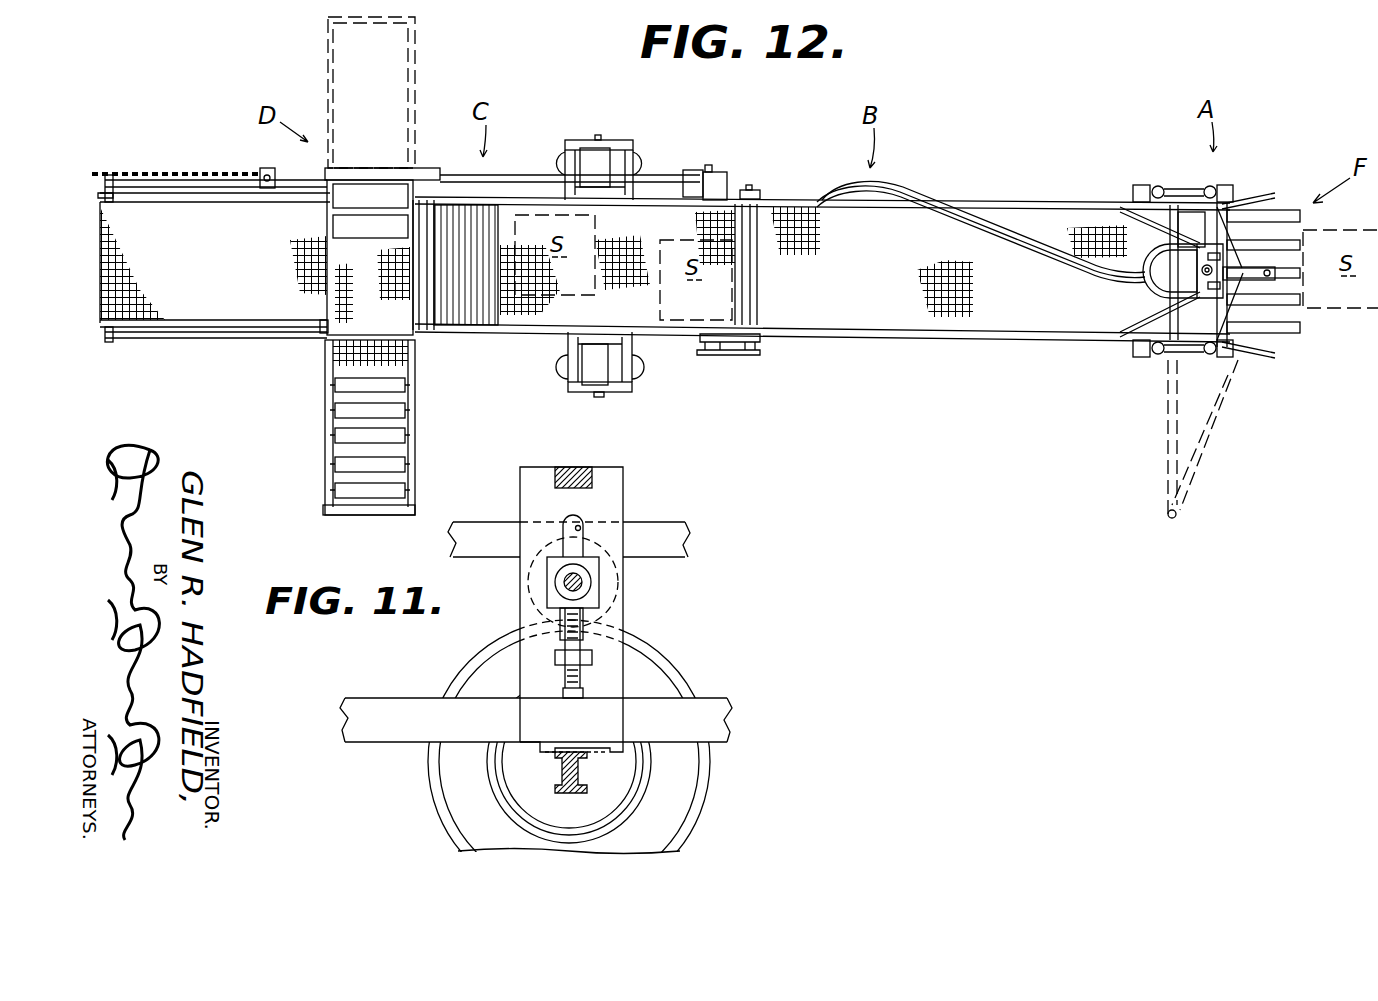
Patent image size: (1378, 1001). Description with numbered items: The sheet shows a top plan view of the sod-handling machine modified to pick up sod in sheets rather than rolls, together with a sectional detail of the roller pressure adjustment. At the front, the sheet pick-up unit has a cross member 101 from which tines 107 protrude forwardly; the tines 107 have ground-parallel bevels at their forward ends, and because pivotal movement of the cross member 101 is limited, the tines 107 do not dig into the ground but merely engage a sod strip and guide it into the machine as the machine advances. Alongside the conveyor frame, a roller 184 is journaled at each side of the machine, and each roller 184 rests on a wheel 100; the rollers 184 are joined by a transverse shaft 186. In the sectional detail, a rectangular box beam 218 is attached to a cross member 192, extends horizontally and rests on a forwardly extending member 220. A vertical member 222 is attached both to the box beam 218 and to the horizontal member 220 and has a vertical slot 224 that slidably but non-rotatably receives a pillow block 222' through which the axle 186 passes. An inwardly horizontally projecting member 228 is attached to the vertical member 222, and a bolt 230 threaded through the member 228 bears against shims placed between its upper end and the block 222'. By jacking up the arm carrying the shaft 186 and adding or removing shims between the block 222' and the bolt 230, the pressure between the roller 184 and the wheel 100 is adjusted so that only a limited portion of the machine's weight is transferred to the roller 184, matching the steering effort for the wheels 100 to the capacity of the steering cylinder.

In FIG. 12, the roller 184 is at (603, 158).
In FIG. 11, the roller 184 is at (530, 577).
In FIG. 12, the transverse shaft 186 is at (599, 397).
In FIG. 11, the transverse shaft 186 is at (560, 590).
In FIG. 12, the tines 107 is at (1274, 211).
In FIG. 12, the cross member 101 is at (1222, 358).
In FIG. 11, the vertical member 222 is at (598, 606).
In FIG. 11, the vertical slot 224 is at (579, 526).
In FIG. 11, the pillow block 222' is at (624, 582).
In FIG. 11, the bolt 230 is at (585, 628).
In FIG. 11, the inwardly horizontally projecting member 228 is at (557, 660).
In FIG. 11, the rectangular box beam 218 is at (688, 729).
In FIG. 11, the forwardly extending member 220 is at (553, 754).
In FIG. 11, the cross member 192 is at (570, 790).
In FIG. 11, the wheel 100 is at (430, 764).